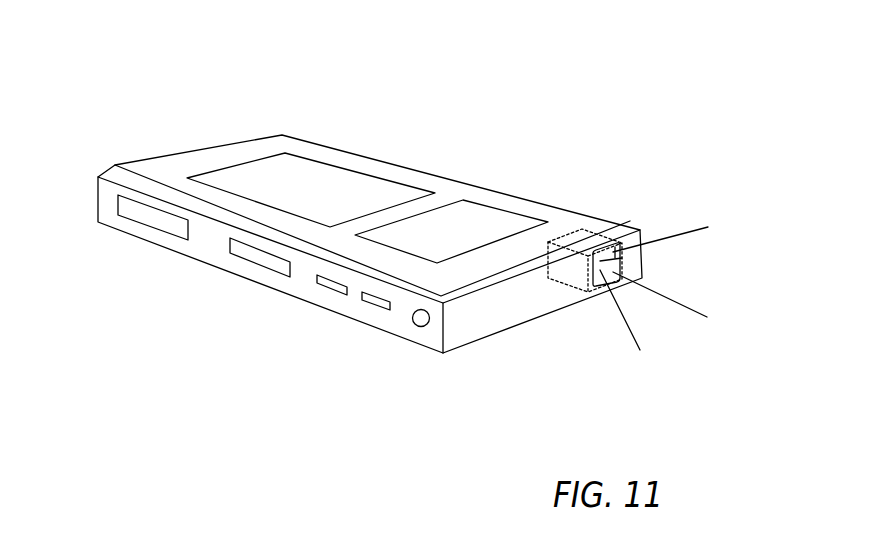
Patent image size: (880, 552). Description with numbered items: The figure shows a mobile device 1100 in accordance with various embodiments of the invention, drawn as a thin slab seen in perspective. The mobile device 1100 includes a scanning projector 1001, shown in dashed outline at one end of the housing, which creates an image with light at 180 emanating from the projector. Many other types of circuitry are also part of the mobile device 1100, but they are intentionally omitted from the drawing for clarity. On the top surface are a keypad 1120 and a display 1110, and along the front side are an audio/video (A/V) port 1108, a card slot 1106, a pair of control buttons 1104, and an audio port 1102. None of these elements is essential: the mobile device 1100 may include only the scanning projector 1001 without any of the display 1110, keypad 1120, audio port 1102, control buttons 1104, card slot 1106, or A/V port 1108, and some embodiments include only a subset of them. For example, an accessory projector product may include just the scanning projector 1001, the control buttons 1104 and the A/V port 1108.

The mobile device 1100 is at (668, 86).
The keypad 1120 is at (320, 173).
The display 1110 is at (462, 212).
The audio/video (A/V) port 1108 is at (140, 214).
The card slot 1106 is at (250, 257).
The control buttons 1104 is at (370, 305).
The audio port 1102 is at (417, 327).
The scanning projector 1001 is at (580, 237).
The light 180 is at (663, 288).